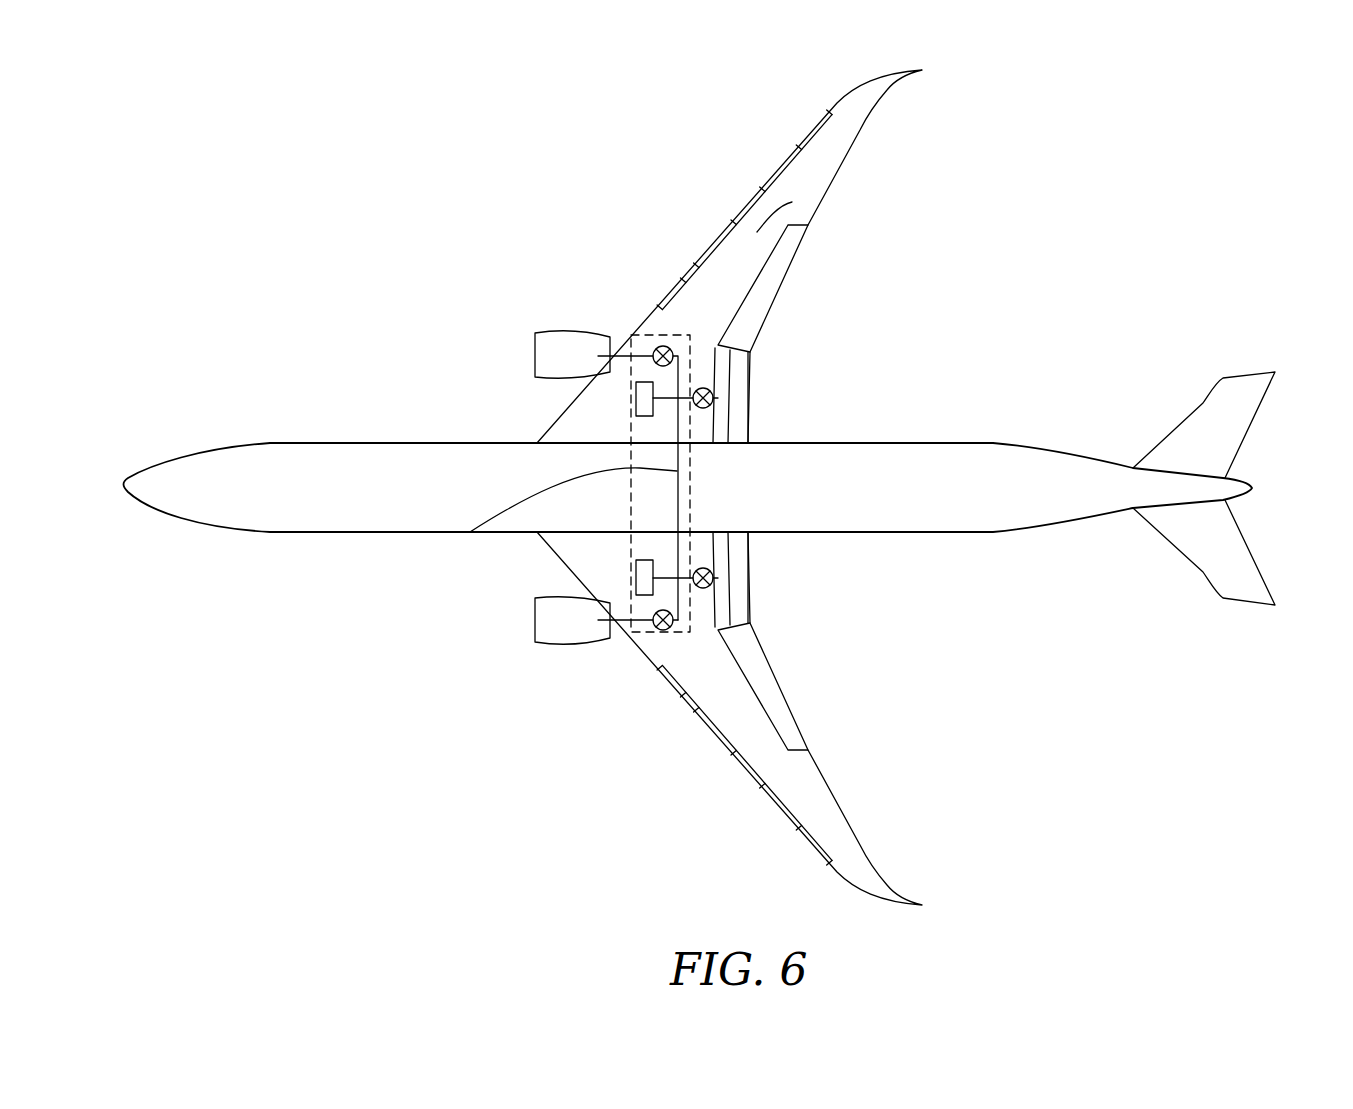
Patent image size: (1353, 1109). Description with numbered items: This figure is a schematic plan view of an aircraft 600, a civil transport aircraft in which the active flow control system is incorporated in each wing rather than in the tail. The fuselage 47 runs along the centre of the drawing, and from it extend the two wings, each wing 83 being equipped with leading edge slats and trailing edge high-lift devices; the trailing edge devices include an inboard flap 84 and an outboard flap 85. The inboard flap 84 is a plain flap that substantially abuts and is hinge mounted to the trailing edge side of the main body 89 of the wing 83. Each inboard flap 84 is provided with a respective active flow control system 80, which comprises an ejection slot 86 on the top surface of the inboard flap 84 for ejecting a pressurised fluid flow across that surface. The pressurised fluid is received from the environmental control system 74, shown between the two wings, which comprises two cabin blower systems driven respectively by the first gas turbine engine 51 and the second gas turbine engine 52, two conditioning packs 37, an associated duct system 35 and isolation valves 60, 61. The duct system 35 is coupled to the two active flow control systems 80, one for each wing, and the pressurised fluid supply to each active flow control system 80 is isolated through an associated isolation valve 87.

The aircraft 600 is at (312, 428).
The fuselage 47 is at (377, 441).
The duct system 35 is at (470, 532).
The first gas turbine engine 51 is at (540, 358).
The second gas turbine engine 52 is at (545, 626).
The conditioning pack 37 is at (636, 400).
The environmental control system 74 is at (653, 334).
The isolation valve 60 is at (664, 345).
The isolation valve 61 is at (664, 631).
The active flow control system 80 is at (898, 339).
The wing 83 is at (779, 150).
The inboard flap 84 is at (749, 407).
The outboard flap 85 is at (790, 272).
The ejection slot 86 is at (728, 381).
The isolation valve 87 is at (711, 392).
The main body 89 is at (792, 202).